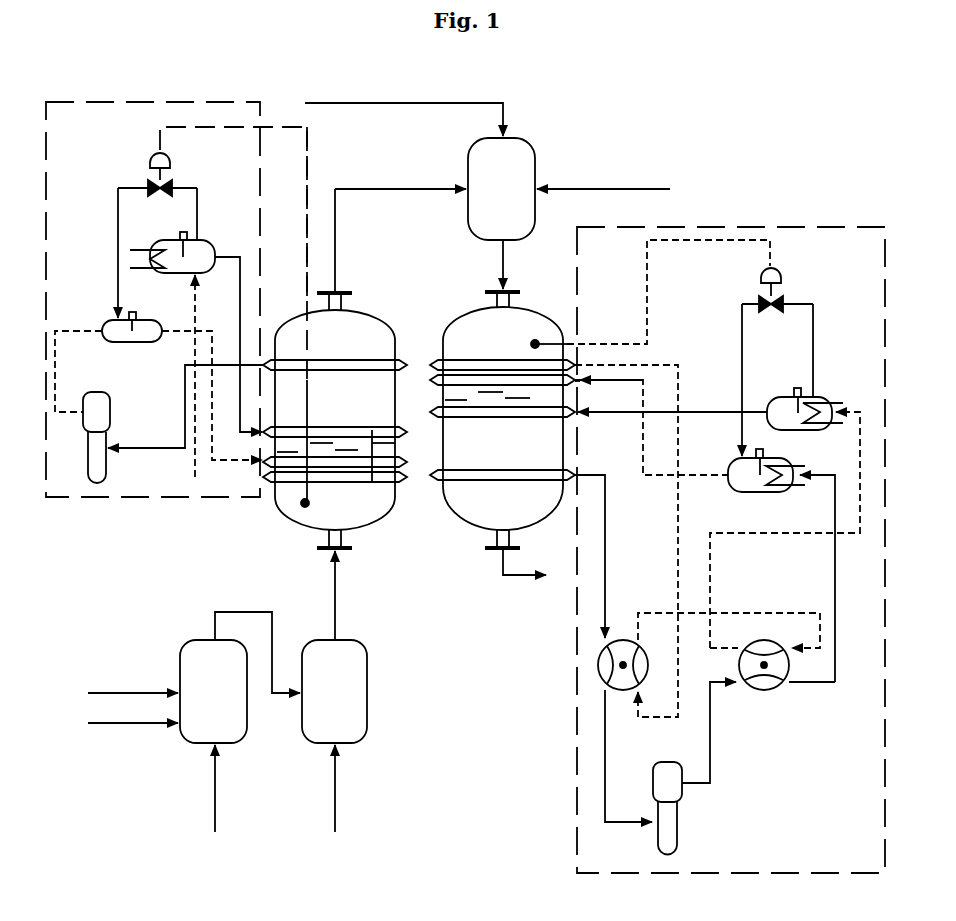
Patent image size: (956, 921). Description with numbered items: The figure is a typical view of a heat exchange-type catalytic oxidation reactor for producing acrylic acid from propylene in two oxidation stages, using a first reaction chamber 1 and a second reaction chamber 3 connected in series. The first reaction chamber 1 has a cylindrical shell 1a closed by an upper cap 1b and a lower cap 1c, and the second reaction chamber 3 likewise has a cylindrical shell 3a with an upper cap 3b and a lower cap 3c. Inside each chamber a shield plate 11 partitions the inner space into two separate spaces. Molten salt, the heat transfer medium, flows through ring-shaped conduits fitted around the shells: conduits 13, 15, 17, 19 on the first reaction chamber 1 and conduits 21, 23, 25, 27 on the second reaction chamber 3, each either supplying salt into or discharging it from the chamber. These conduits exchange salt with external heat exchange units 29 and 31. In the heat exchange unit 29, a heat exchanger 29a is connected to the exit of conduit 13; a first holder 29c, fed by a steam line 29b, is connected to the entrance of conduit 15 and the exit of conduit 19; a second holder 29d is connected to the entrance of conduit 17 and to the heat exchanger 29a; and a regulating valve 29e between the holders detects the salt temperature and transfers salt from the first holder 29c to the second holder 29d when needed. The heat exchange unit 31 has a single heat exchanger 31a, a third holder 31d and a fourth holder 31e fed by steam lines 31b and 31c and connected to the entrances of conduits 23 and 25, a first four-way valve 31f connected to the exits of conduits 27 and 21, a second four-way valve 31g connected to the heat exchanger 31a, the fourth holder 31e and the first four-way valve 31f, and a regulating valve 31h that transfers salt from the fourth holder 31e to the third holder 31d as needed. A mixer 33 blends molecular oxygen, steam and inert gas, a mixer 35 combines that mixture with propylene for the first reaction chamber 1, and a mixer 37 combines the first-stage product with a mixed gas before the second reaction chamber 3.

The first reaction chamber 1 is at (355, 270).
The cylindrical shell 1a is at (397, 386).
The upper cap 1b is at (297, 316).
The lower cap 1c is at (310, 530).
The second reaction chamber 3 is at (462, 262).
The cylindrical shell 3a is at (443, 452).
The upper cap 3b is at (514, 293).
The lower cap 3c is at (540, 527).
The shield plate 11 is at (350, 455).
The conduit 13 is at (347, 353).
The conduit 15 is at (372, 440).
The conduit 17 is at (289, 466).
The conduit 19 is at (293, 481).
The conduit 21 is at (543, 363).
The conduit 23 is at (542, 383).
The conduit 25 is at (467, 400).
The conduit 27 is at (488, 483).
The heat exchange unit 29 is at (126, 100).
The heat exchanger 29a is at (96, 483).
The steam line 29b is at (143, 268).
The first holder 29c is at (205, 240).
The second holder 29d is at (112, 320).
The regulating valve 29e is at (147, 162).
The heat exchange unit 31 is at (802, 226).
The heat exchanger 31a is at (680, 822).
The steam line 31b is at (797, 460).
The steam line 31c is at (833, 402).
The third holder 31d is at (740, 486).
The fourth holder 31e is at (787, 396).
The first 4-way valve 31f is at (597, 665).
The second 4-way valve 31g is at (766, 690).
The regulating valve 31h is at (782, 278).
The mixer 33 is at (196, 636).
The mixer 35 is at (350, 636).
The mixer 37 is at (523, 140).